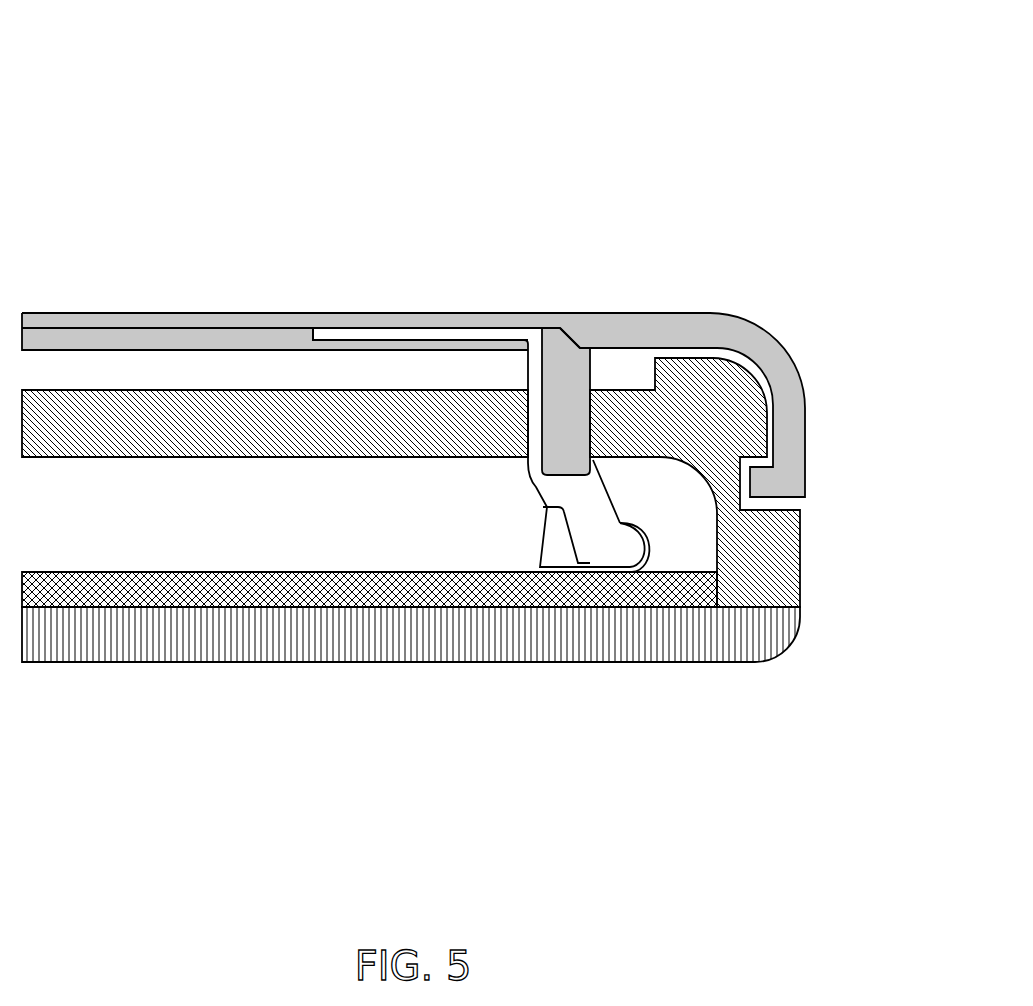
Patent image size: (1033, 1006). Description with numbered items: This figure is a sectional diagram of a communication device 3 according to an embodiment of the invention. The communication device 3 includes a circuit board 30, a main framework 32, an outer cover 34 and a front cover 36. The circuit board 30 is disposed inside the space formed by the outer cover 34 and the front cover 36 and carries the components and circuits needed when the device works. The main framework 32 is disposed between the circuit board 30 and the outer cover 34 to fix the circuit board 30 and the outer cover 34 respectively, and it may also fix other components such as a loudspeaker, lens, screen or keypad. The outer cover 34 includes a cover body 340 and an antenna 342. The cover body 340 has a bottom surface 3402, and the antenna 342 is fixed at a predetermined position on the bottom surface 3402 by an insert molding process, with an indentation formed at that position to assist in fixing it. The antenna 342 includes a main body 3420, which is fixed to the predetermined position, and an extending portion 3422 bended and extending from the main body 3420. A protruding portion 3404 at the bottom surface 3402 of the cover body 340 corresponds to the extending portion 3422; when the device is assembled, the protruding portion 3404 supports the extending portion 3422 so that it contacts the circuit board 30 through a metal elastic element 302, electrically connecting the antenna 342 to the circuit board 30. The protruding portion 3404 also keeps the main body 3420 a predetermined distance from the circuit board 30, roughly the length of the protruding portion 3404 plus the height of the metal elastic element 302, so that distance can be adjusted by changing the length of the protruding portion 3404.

The communication device 3 is at (150, 111).
The circuit board 30 is at (323, 597).
The metal elastic element 302 is at (620, 518).
The main framework 32 is at (71, 418).
The outer cover 34 is at (413, 315).
The cover body 340 is at (386, 316).
The antenna 342 is at (306, 338).
The bottom surface 3402 is at (185, 328).
The protruding portion 3404 is at (563, 390).
The main body 3420 is at (457, 333).
The extending portion 3422 is at (577, 482).
The front cover 36 is at (432, 632).